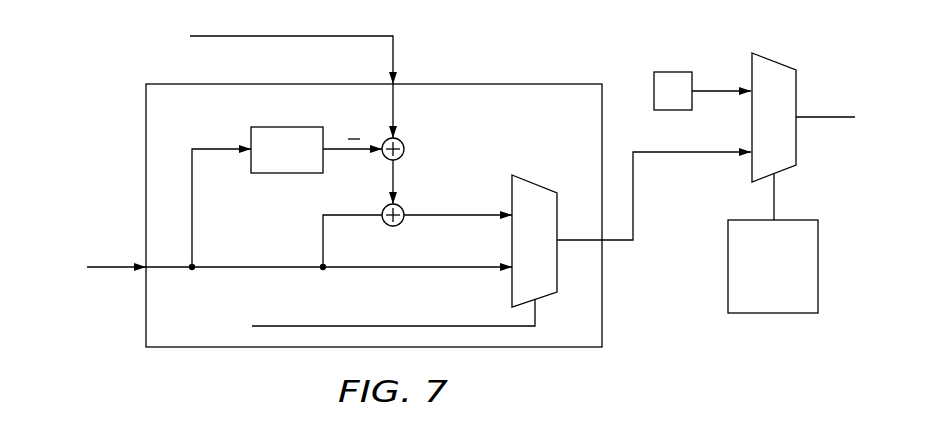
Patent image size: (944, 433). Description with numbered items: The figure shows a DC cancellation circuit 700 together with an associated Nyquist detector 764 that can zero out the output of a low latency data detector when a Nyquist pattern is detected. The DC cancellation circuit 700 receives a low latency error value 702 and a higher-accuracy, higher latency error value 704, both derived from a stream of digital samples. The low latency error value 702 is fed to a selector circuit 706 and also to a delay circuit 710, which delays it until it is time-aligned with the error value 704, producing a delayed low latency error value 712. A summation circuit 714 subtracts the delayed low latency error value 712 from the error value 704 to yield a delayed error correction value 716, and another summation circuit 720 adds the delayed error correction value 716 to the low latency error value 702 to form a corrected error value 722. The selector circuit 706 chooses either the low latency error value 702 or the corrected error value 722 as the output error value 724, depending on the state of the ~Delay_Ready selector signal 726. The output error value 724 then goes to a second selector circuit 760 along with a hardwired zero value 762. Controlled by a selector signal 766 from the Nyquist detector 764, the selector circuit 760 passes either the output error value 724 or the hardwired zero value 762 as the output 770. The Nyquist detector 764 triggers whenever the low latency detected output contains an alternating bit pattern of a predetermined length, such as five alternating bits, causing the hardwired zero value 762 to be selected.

The DC cancellation circuit 700 is at (197, 337).
The low latency error value 702 is at (124, 266).
The error value 704 is at (288, 37).
The selector circuit 706 is at (537, 184).
The delay circuit 710 is at (268, 174).
The delayed low latency error value 712 is at (341, 151).
The summation circuit 714 is at (404, 147).
The delayed error correction value 716 is at (393, 175).
The summation circuit 720 is at (384, 222).
The corrected error value 722 is at (425, 216).
The output error value 724 is at (633, 197).
The ~Delay_Ready selector signal 726 is at (410, 325).
The selector circuit 760 is at (773, 61).
The hardwired zero value 762 is at (672, 72).
The Nyquist detector 764 is at (754, 307).
The selector signal 766 is at (776, 196).
The output 770 is at (822, 116).